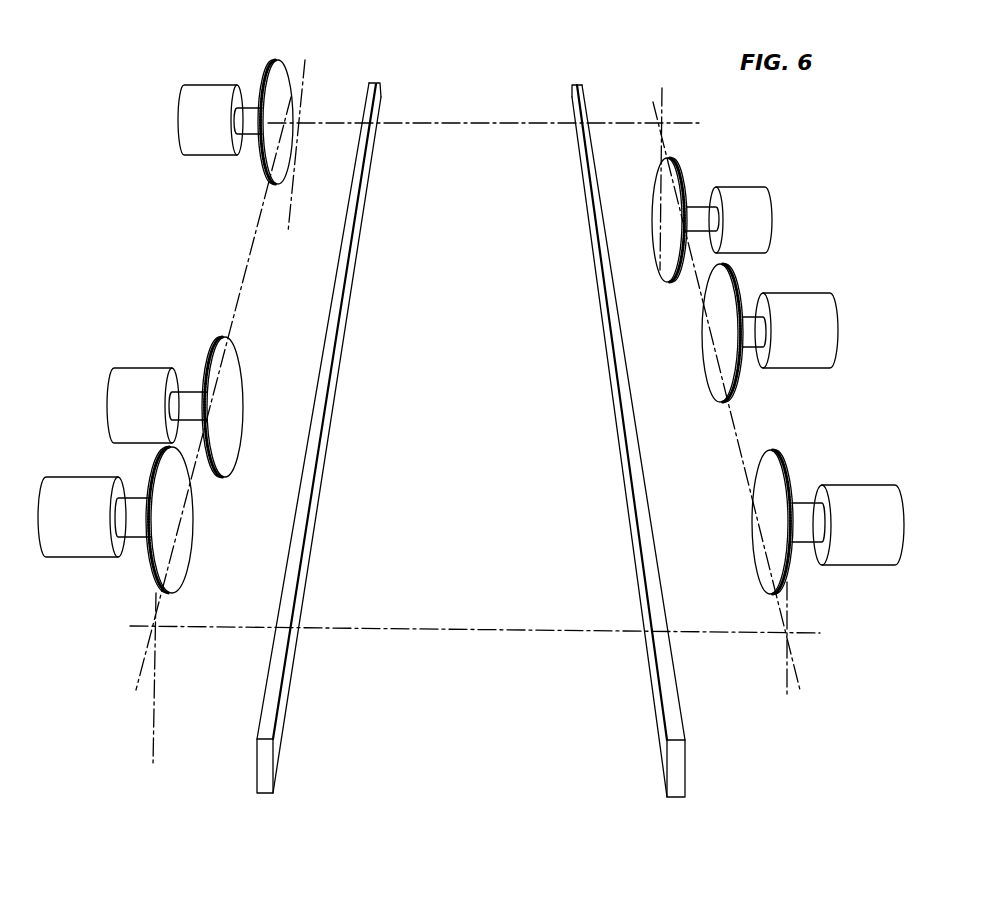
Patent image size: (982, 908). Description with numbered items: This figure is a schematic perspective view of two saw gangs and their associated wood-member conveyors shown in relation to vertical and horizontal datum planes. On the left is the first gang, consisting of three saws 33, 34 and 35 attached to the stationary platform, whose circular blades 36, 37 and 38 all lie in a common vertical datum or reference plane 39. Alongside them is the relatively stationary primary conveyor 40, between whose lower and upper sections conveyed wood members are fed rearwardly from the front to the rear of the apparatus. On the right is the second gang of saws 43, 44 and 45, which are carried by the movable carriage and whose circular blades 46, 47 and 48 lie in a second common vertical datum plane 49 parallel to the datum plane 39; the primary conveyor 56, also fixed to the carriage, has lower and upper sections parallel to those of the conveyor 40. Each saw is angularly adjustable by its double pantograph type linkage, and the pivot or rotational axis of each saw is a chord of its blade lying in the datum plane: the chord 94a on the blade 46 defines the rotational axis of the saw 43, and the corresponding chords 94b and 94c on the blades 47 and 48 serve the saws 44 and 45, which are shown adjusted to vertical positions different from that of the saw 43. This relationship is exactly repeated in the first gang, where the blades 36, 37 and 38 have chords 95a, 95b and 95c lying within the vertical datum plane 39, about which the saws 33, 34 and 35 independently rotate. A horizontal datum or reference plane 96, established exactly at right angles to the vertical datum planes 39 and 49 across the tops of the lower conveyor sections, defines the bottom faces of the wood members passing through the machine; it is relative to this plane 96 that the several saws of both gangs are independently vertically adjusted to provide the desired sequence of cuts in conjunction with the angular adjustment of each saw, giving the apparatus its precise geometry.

The saw 33 is at (212, 84).
The saw 34 is at (155, 368).
The saw 35 is at (90, 479).
The circular blade 36 is at (298, 134).
The circular blade 37 is at (258, 423).
The circular blade 38 is at (209, 522).
The vertical datum plane 39 is at (245, 283).
The primary conveyor 40 is at (303, 551).
The saw 43 is at (868, 483).
The saw 44 is at (814, 293).
The saw 45 is at (761, 187).
The circular blade 46 is at (749, 541).
The circular blade 47 is at (701, 353).
The circular blade 48 is at (697, 217).
The vertical datum plane 49 is at (738, 450).
The primary conveyor 56 is at (626, 491).
The chord 94a is at (768, 563).
The chord 94b is at (718, 372).
The chord 94c is at (672, 178).
The chord 95a is at (283, 166).
The chord 95b is at (220, 386).
The chord 95c is at (178, 543).
The horizontal datum plane 96 is at (470, 628).